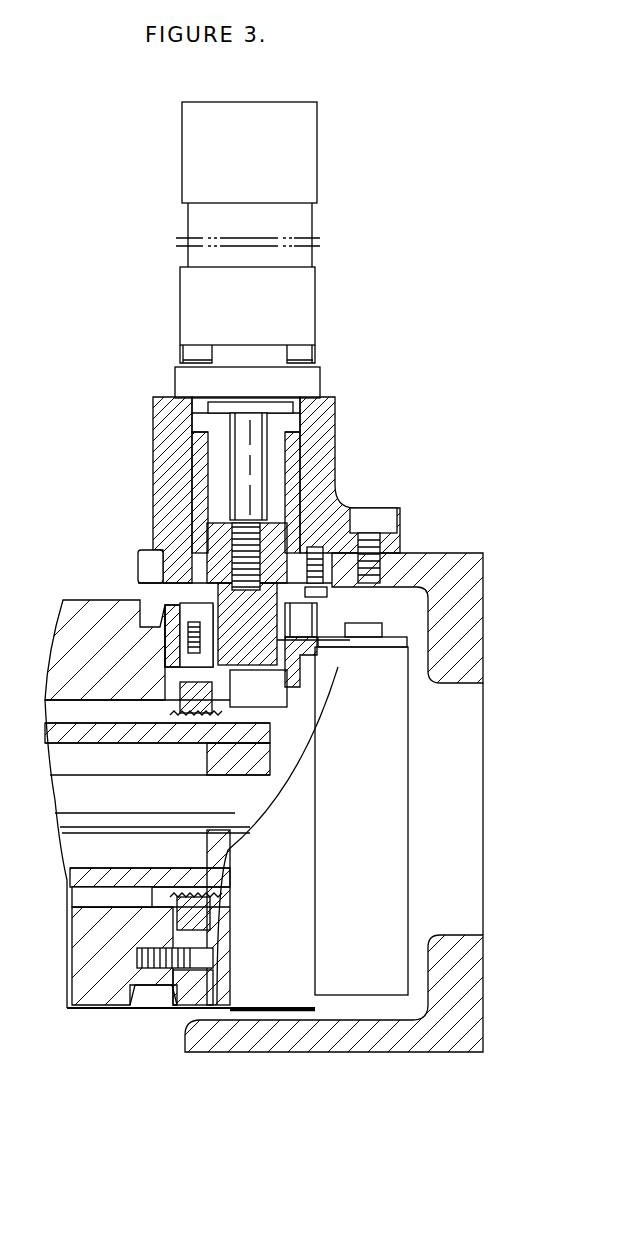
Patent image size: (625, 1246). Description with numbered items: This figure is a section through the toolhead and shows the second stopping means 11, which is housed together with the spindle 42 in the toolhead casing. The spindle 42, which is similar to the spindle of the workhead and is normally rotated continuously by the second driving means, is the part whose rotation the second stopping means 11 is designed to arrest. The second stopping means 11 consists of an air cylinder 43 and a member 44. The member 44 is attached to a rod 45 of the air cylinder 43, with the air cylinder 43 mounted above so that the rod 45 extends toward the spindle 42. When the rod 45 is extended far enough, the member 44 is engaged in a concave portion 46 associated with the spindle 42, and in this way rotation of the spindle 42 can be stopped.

The second stopping means 11 is at (292, 483).
The spindle 42 is at (417, 812).
The air cylinder 43 is at (291, 260).
The member 44 is at (273, 567).
The rod 45 is at (255, 470).
The concave portion 46 is at (297, 622).